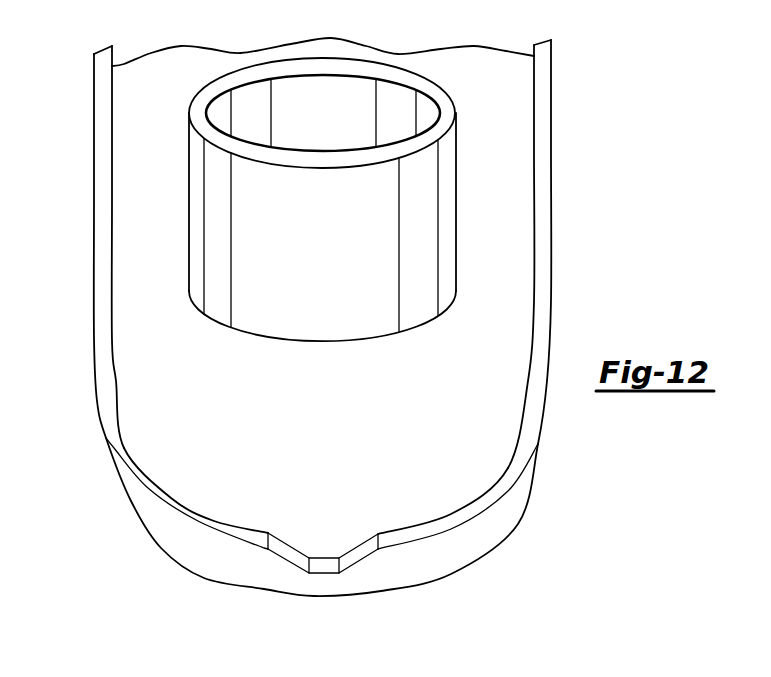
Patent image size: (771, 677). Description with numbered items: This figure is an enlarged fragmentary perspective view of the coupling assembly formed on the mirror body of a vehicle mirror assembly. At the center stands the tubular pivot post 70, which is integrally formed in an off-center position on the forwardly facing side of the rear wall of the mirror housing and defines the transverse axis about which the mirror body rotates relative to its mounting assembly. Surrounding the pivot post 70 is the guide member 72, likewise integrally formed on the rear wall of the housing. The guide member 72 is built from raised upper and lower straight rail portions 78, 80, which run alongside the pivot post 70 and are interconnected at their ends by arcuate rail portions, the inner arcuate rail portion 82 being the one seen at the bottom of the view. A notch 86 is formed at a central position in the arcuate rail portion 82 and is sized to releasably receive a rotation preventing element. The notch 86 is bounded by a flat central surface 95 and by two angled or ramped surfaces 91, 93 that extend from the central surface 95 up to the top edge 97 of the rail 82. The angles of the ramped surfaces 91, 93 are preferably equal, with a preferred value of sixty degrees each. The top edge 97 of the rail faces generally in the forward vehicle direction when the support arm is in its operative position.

The pivot post 70 is at (285, 322).
The guide member 72 is at (553, 80).
The upper straight rail portion 78 is at (107, 155).
The lower straight rail portion 80 is at (540, 167).
The inner arcuate rail portion 82 is at (230, 563).
The notch 86 is at (343, 534).
The angled surface 91 is at (285, 552).
The angled surface 93 is at (358, 552).
The central surface 95 is at (323, 567).
The top edge 97 is at (175, 497).